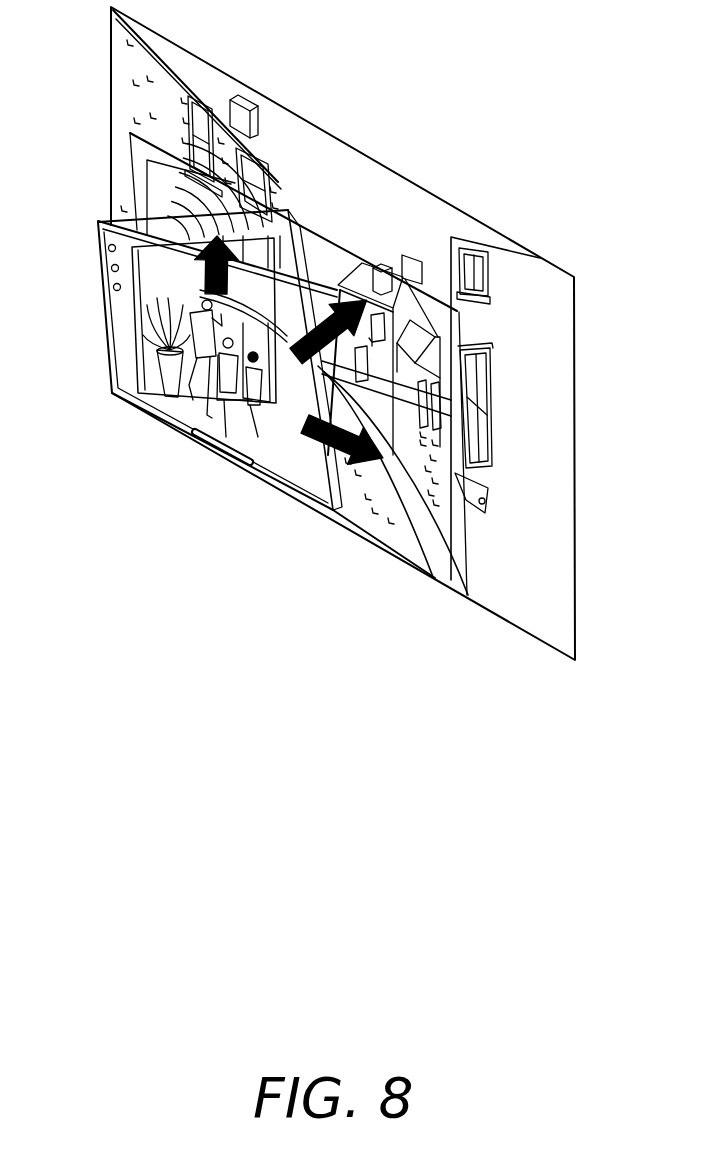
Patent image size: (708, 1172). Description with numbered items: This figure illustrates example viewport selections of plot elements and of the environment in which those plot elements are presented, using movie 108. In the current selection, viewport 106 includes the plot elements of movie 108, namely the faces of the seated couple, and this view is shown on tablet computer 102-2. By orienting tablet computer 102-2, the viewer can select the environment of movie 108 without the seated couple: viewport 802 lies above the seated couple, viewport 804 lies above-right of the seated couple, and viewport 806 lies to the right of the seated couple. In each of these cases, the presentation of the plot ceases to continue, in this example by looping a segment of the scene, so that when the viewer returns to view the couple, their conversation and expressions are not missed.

The movie 108 is at (336, 333).
The viewport 802 is at (150, 125).
The viewport 804 is at (472, 280).
The viewport 806 is at (499, 416).
The viewport 106 is at (165, 349).
The tablet computer 102-2 is at (220, 377).